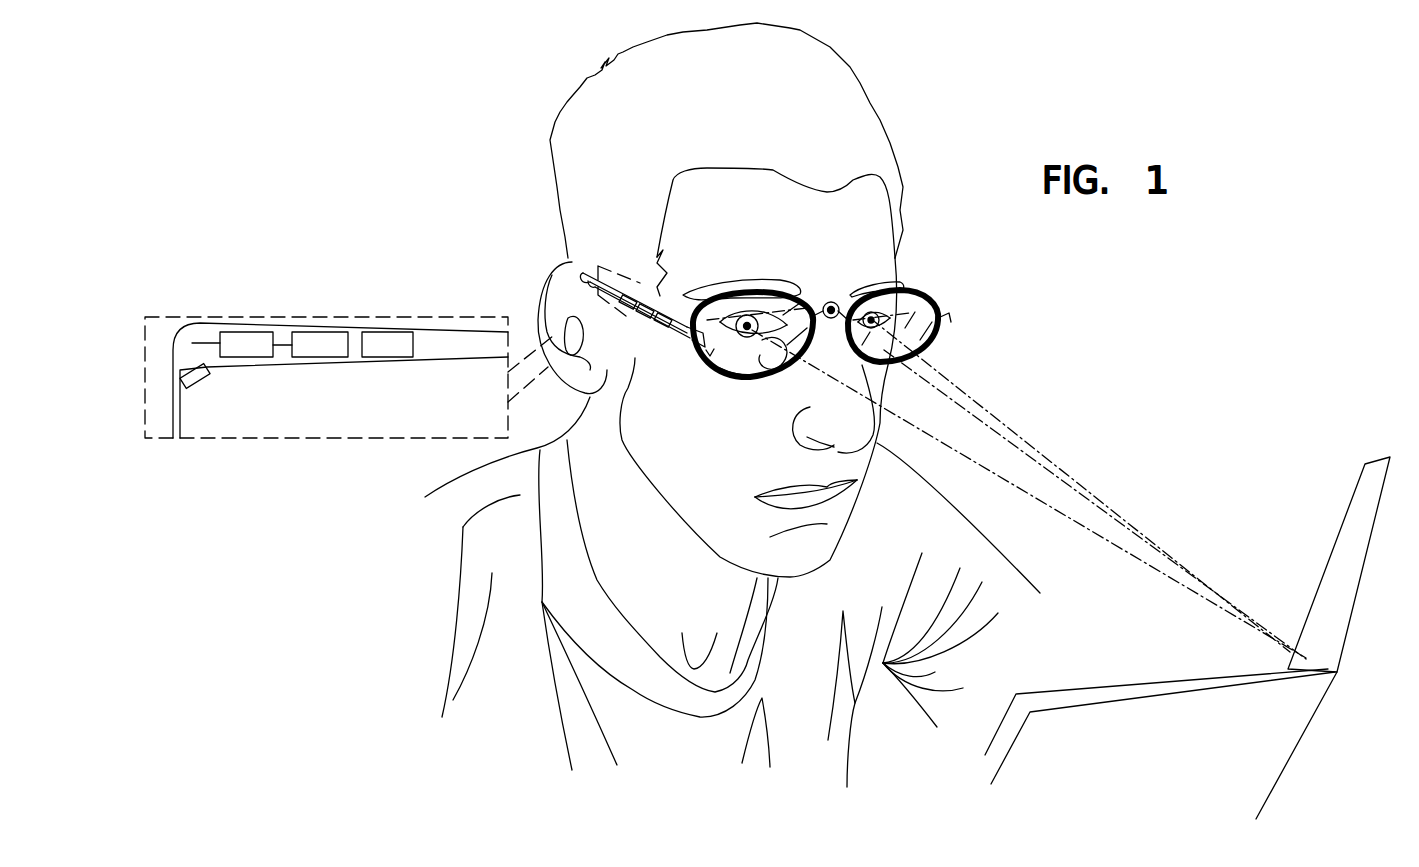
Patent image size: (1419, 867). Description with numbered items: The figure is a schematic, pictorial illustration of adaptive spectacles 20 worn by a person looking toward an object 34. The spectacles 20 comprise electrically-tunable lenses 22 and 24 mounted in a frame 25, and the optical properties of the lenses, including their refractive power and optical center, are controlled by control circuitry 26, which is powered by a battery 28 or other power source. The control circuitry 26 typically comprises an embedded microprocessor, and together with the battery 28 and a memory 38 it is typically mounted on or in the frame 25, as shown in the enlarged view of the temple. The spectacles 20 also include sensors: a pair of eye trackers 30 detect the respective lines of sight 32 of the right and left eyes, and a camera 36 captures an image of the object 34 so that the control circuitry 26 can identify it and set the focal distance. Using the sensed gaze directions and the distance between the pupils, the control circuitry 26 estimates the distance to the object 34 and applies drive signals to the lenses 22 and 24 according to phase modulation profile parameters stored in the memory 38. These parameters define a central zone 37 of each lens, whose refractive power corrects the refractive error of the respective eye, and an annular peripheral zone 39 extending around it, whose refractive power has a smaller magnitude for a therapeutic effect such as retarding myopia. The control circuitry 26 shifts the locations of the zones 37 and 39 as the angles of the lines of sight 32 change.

The adaptive spectacles 20 is at (948, 273).
The electrically-tunable lens 22 is at (723, 376).
The electrically-tunable lens 24 is at (930, 343).
The frame 25 is at (693, 298).
The control circuitry 26 is at (670, 332).
The battery 28 is at (645, 298).
The eye tracker 30 is at (699, 364).
The line of sight 32 is at (1062, 467).
The object 34 is at (1313, 647).
The camera 36 is at (831, 301).
The central zone 37 is at (757, 360).
The memory 38 is at (640, 332).
The peripheral zone 39 is at (736, 380).